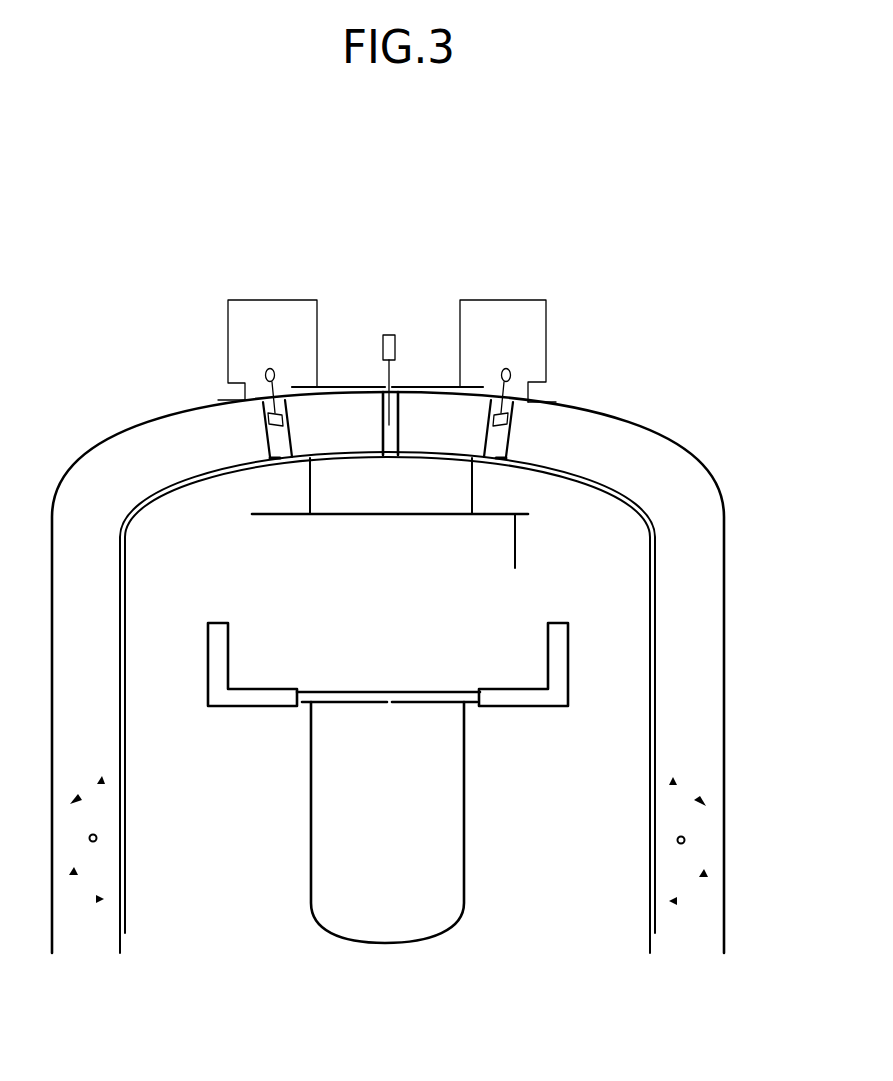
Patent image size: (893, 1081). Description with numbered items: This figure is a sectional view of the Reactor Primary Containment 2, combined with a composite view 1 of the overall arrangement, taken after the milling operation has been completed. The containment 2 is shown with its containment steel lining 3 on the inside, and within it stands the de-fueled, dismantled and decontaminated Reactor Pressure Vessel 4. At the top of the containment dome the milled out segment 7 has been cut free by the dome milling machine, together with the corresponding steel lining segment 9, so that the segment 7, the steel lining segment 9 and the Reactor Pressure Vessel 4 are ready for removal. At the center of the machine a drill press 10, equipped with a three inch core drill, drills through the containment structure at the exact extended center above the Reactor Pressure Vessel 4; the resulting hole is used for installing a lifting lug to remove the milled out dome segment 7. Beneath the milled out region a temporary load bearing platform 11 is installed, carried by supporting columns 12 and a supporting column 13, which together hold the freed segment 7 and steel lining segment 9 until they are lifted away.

The composite view 1 is at (523, 300).
The Reactor Primary Containment (RPC) 2 is at (725, 527).
The containment steel lining 3 is at (650, 571).
The Reactor Pressure Vessel (RPV) 4 is at (465, 887).
The milled out segment 7 is at (343, 415).
The steel lining segment 9 is at (292, 467).
The drill press 10 is at (395, 333).
The temporary load bearing platform 11 is at (377, 515).
The supporting columns 12 is at (310, 483).
The supporting column 13 is at (512, 532).